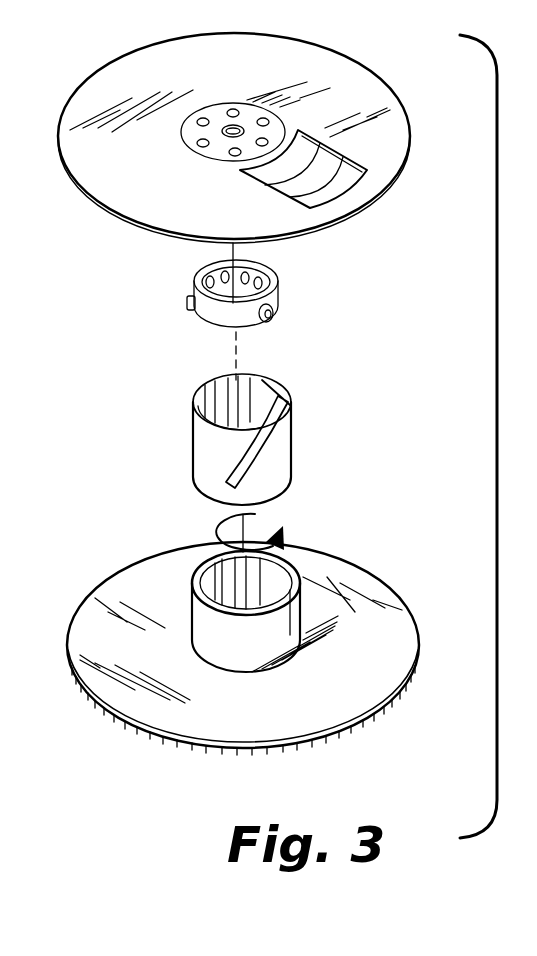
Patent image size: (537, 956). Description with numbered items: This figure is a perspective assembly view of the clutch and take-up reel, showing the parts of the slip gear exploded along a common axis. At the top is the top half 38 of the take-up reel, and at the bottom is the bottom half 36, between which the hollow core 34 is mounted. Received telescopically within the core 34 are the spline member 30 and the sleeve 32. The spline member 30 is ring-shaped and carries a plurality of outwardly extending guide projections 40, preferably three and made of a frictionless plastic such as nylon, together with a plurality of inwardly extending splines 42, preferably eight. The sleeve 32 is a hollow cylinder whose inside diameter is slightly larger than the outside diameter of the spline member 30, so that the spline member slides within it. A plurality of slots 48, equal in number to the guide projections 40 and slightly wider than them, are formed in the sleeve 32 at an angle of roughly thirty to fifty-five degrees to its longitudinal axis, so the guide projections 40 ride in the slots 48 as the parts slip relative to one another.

The spline member 30 is at (267, 293).
The sleeve 32 is at (274, 441).
The hollow core 34 is at (227, 655).
The bottom half 36 is at (358, 578).
The top half 38 is at (408, 125).
The guide projections 40 is at (190, 307).
The splines 42 is at (268, 292).
The slots 48 is at (257, 383).